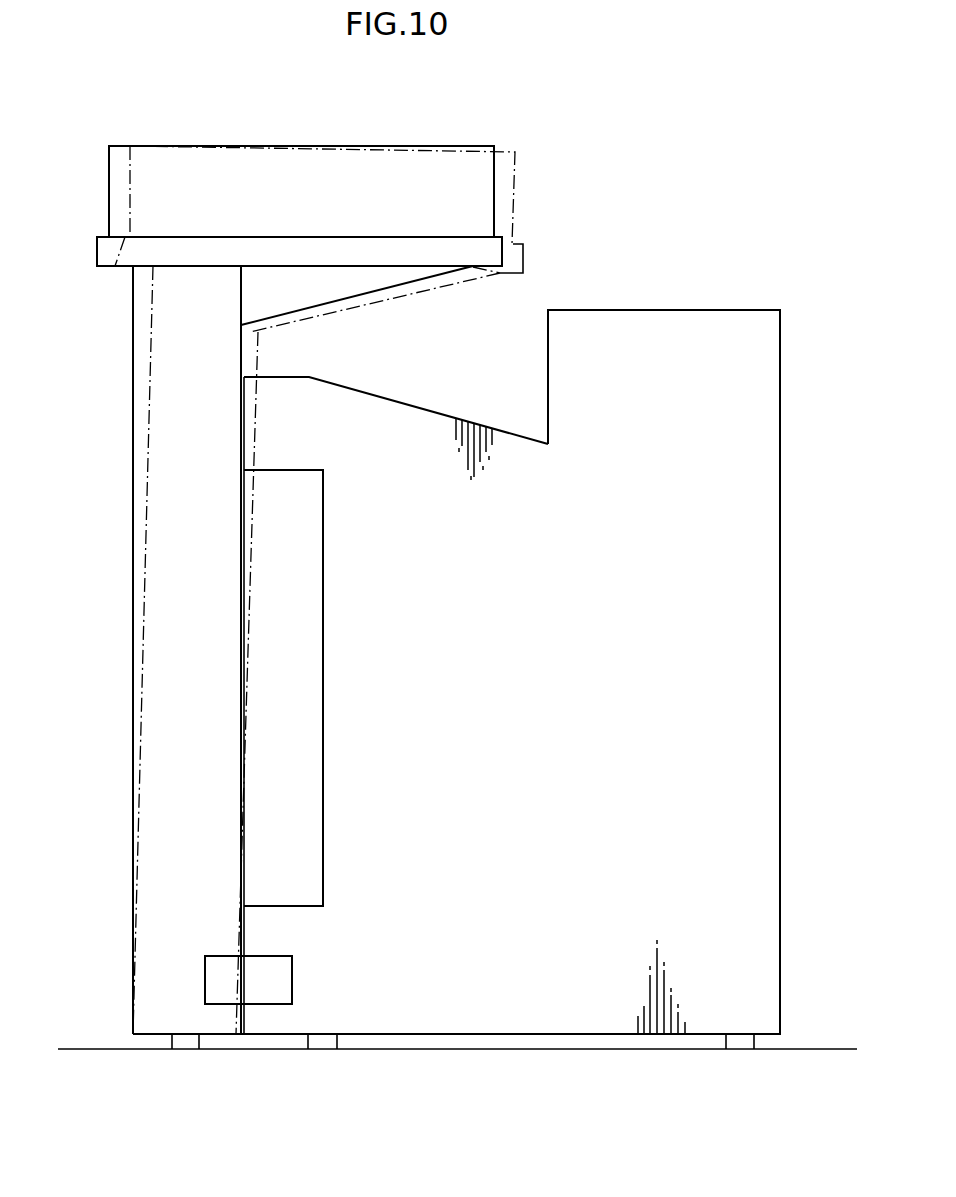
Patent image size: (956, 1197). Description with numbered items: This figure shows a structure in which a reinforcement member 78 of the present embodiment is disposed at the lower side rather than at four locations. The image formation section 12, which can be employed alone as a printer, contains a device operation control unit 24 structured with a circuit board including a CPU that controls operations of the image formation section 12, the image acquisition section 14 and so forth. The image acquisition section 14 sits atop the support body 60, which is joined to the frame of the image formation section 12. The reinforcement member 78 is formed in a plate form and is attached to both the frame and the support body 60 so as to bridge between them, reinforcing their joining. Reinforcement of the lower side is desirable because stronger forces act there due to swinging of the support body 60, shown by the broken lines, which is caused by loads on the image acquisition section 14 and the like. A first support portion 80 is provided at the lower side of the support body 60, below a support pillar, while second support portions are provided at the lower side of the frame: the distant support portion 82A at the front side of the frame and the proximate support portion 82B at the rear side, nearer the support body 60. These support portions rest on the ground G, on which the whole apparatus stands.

The image formation section 12 is at (781, 538).
The image acquisition section 14 is at (116, 146).
The device operation control unit 24 is at (324, 690).
The support body 60 is at (133, 512).
The reinforcement member 78 is at (270, 1004).
The first support portion 80 is at (172, 1040).
The distant support portion 82A is at (754, 1043).
The proximate support portion 82B is at (337, 1040).
The floor surface G is at (90, 1042).